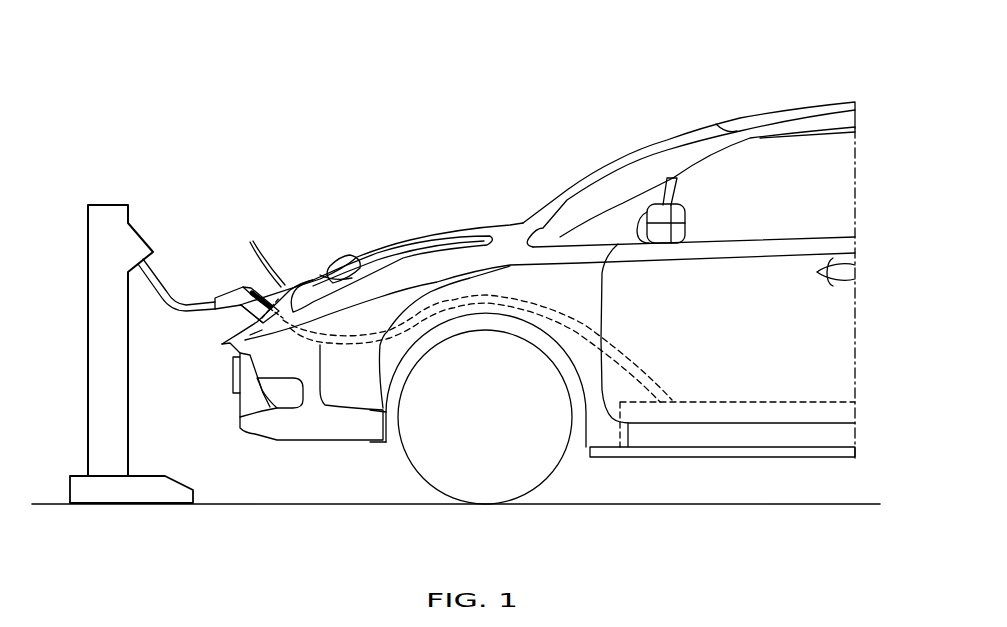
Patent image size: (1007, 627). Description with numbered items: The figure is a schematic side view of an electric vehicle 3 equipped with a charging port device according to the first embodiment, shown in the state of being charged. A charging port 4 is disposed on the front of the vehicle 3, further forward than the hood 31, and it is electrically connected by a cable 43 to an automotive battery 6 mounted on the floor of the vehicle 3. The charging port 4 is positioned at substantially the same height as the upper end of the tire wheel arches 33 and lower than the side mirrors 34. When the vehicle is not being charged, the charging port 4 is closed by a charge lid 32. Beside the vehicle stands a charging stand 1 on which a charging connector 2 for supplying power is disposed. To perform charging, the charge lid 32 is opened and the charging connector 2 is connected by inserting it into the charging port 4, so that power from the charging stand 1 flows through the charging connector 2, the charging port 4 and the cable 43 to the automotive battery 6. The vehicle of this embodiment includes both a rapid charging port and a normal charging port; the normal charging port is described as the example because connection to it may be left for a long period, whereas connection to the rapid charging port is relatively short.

The charging stand 1 is at (117, 200).
The charging connector 2 is at (234, 289).
The vehicle 3 is at (530, 295).
The hood 31 is at (335, 262).
The charge lid 32 is at (279, 278).
The tire wheel arches 33 is at (547, 330).
The side mirrors 34 is at (653, 216).
The charging port 4 is at (272, 333).
The cable 43 is at (518, 300).
The automotive battery 6 is at (800, 402).